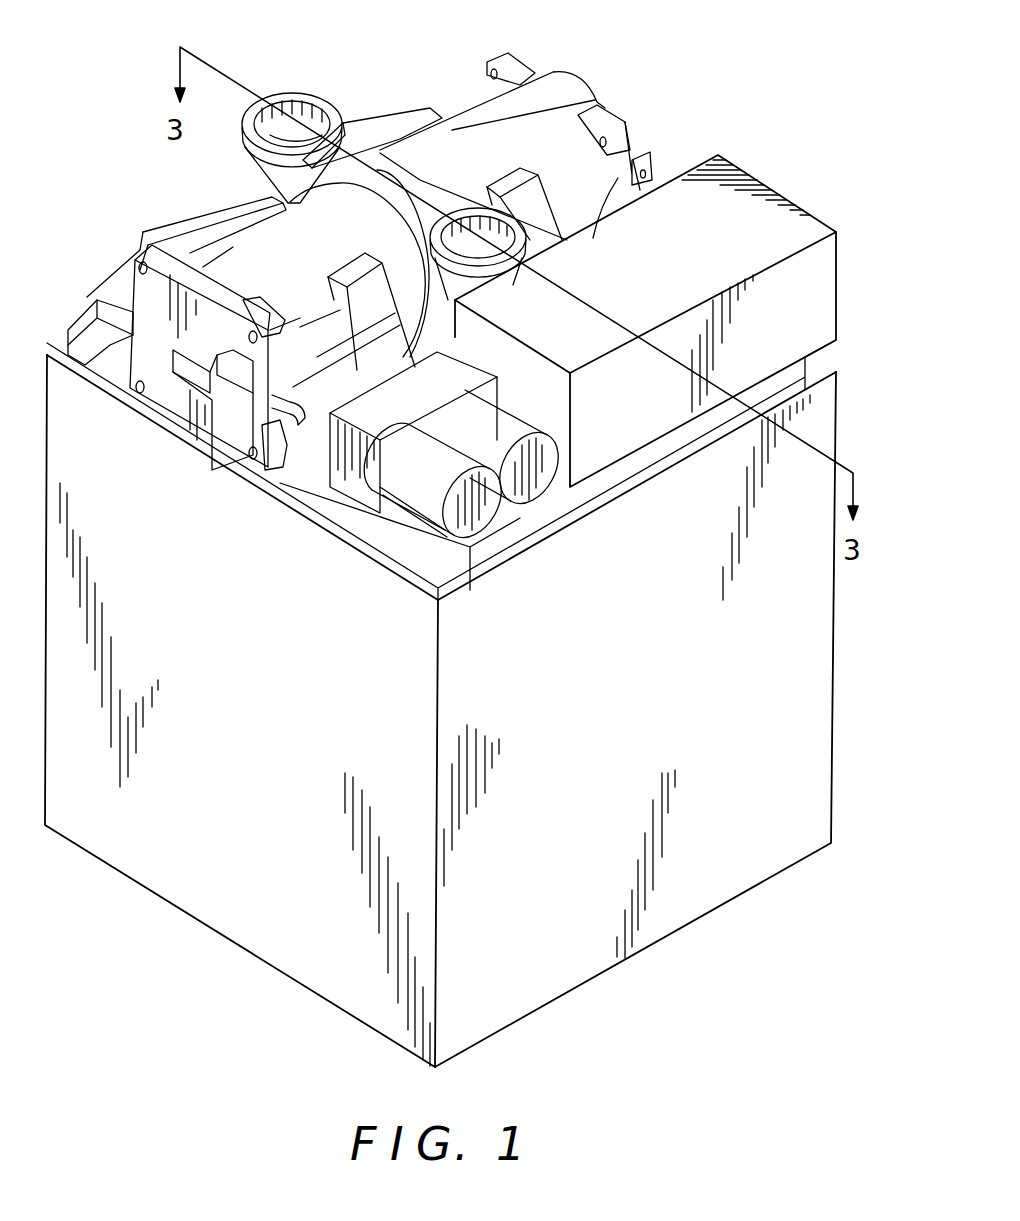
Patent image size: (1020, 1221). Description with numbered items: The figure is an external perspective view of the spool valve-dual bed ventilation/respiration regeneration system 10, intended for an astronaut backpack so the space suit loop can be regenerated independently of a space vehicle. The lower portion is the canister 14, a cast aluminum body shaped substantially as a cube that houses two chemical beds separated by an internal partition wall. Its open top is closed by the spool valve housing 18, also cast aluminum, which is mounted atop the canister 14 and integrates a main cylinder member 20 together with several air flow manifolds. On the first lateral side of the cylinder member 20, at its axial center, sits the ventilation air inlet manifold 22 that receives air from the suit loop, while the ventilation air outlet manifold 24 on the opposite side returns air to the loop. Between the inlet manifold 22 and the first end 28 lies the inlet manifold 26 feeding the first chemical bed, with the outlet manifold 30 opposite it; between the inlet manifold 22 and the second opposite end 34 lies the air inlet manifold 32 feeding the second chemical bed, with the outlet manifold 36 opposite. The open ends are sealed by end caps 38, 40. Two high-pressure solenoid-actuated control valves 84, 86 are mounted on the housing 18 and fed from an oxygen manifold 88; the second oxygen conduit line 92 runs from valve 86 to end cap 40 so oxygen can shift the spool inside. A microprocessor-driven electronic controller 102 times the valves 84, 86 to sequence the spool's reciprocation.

The spool valve-dual bed ventilation/respiration regeneration system 10 is at (682, 126).
The canister 14 is at (650, 702).
The spool valve housing 18 is at (315, 495).
The main cylinder member 20 is at (290, 269).
The ventilation air inlet manifold 22 is at (245, 127).
The ventilation air outlet manifold 24 is at (470, 212).
The inlet manifold 26 is at (375, 125).
The first end 28 is at (570, 85).
The outlet manifold 30 is at (543, 222).
The air inlet manifold 32 is at (195, 213).
The second opposite end 34 is at (180, 285).
The outlet manifold 36 is at (383, 313).
The end cap 38 is at (608, 128).
The end cap 40 is at (180, 398).
The solenoid-actuated control valve 84 is at (545, 480).
The solenoid-actuated control valve 86 is at (478, 510).
The oxygen manifold 88 is at (420, 409).
The second oxygen conduit line 92 is at (300, 423).
The microprocessor-driven electronic controller 102 is at (672, 272).